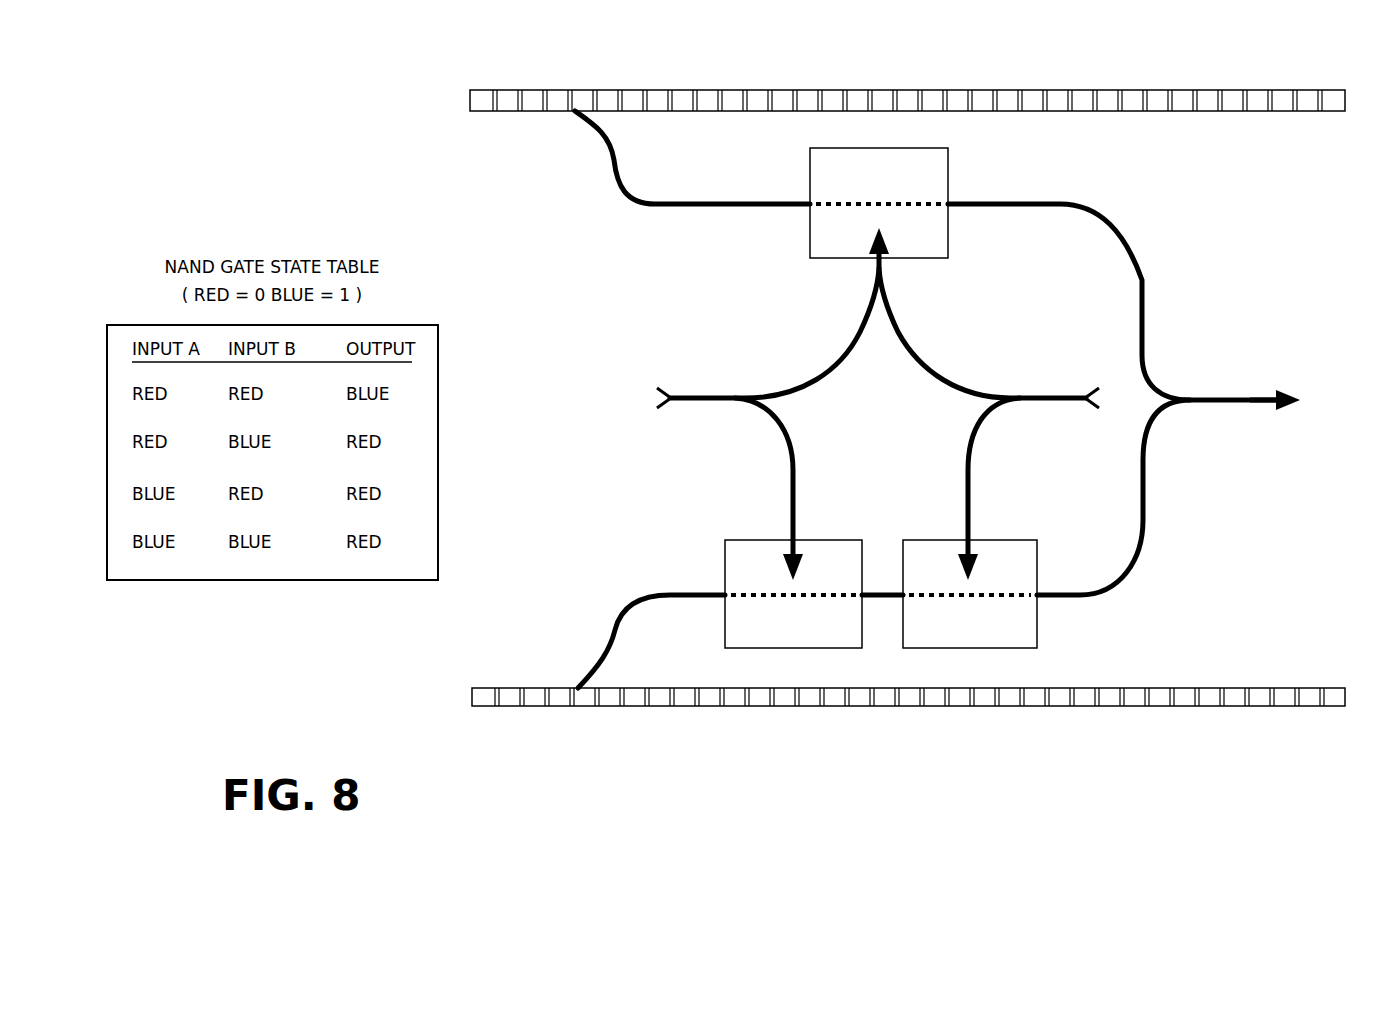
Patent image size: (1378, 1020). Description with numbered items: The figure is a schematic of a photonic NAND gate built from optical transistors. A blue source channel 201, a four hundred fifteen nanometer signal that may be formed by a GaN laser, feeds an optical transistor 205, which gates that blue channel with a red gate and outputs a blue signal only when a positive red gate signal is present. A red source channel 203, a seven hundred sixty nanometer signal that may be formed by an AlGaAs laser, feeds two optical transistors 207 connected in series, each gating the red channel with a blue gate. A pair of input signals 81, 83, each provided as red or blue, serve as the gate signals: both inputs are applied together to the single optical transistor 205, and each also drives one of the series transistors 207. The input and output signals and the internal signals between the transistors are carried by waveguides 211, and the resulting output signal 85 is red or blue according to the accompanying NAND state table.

The blue source channel 201 is at (522, 113).
The red source channel 203 is at (535, 688).
The optical transistor 205 is at (810, 226).
The optical transistor 207 is at (822, 540).
The waveguides 211 is at (1143, 262).
The input signal 81 is at (1065, 393).
The input signal 83 is at (652, 396).
The output signal 85 is at (1275, 396).